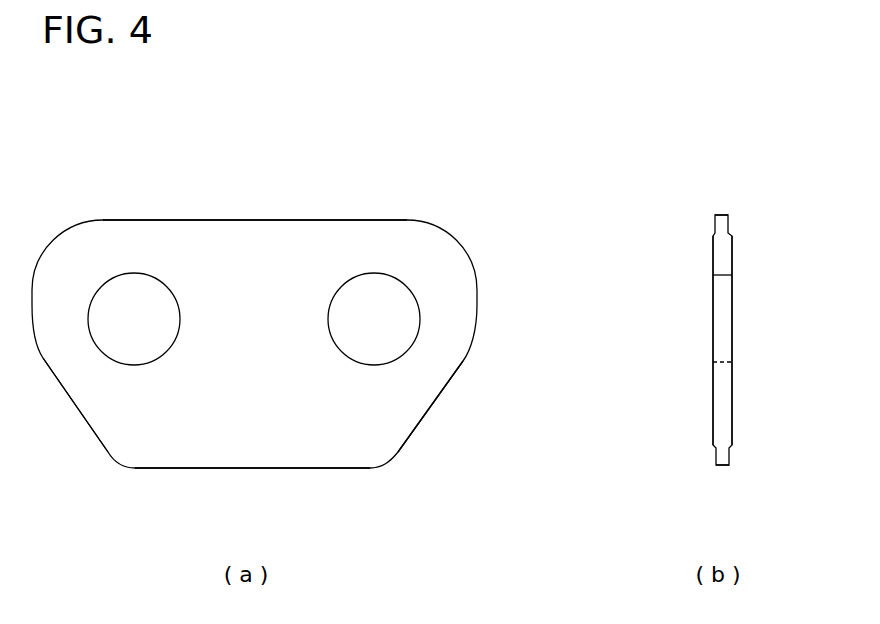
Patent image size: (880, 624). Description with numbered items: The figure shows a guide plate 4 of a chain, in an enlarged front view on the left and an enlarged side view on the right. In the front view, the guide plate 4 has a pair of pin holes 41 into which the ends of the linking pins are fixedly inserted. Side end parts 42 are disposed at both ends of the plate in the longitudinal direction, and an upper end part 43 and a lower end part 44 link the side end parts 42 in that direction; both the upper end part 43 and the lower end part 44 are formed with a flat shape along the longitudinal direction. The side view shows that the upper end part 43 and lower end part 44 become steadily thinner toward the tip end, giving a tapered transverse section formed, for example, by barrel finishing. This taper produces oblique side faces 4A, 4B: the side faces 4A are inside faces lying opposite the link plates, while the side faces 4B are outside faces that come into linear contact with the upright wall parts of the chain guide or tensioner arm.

The guide plate 4 is at (222, 186).
The oblique side face (inside face) 4A is at (713, 233).
The oblique side face (outside face) 4B is at (732, 233).
The pin hole 41 is at (95, 342).
The side end part 42 is at (75, 413).
The upper end part 43 is at (297, 220).
The lower end part 44 is at (258, 469).